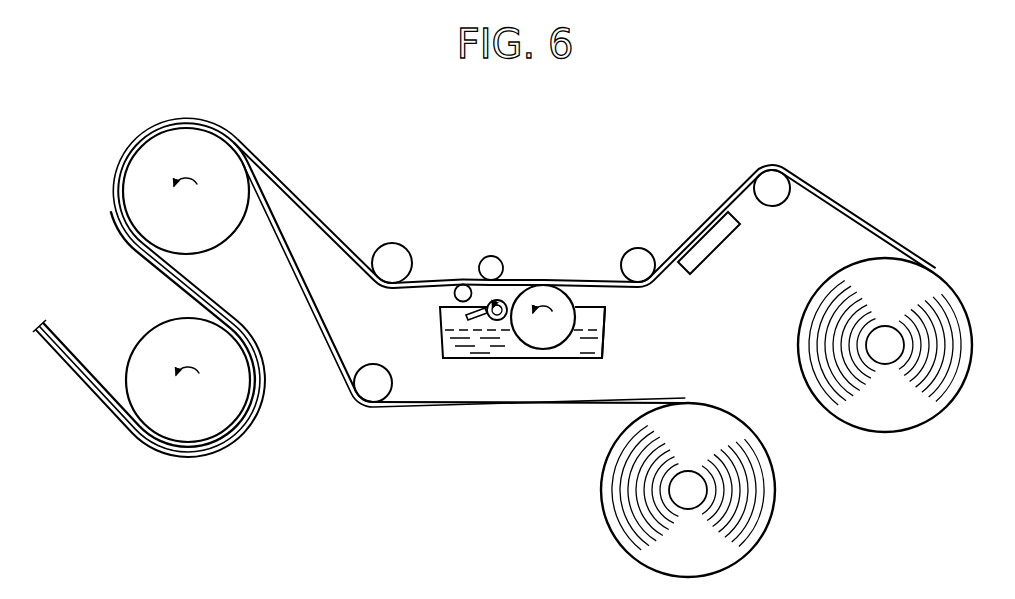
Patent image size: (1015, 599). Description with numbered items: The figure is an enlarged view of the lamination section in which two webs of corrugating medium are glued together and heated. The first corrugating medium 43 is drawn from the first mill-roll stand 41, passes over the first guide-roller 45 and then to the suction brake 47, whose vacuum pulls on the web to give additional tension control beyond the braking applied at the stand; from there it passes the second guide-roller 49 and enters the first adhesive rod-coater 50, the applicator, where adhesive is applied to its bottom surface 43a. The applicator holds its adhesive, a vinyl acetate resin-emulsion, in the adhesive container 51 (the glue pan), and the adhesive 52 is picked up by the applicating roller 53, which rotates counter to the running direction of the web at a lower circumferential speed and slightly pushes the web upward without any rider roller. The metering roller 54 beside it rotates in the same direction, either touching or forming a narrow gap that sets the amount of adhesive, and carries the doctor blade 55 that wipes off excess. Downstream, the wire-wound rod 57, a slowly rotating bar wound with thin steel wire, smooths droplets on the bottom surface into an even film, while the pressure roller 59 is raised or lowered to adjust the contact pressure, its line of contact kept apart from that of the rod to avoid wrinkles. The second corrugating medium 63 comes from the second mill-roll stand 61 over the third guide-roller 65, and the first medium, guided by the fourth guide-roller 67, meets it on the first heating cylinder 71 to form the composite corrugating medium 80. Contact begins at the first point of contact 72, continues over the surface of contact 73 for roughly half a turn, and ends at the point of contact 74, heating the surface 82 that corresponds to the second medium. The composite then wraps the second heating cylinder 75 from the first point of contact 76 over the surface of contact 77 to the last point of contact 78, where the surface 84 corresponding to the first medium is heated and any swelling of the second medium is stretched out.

The first mill-roll stand 41 is at (888, 352).
The first corrugating medium 43 is at (855, 216).
The bottom surface 43a is at (630, 300).
The first guide-roller 45 is at (781, 197).
The suction brake 47 is at (712, 246).
The second guide-roller 49 is at (637, 262).
The first adhesive rod-coater 50 is at (500, 359).
The adhesive container 51 is at (604, 348).
The coating liquid 52 is at (578, 342).
The applicating roller 53 is at (548, 300).
The metering roller 54 is at (499, 302).
The doctor blade 55 is at (466, 317).
The wire-wound rod 57 is at (462, 290).
The pressure roller 59 is at (490, 262).
The second mill-roll stand 61 is at (700, 489).
The second corrugating medium 63 is at (527, 412).
The third guide-roller 65 is at (371, 388).
The fourth guide-roller 67 is at (390, 256).
The first heating cylinder 71 is at (133, 170).
The first point of contact 72 is at (222, 147).
The surface of contact 73 is at (144, 150).
The point of contact 74 is at (141, 226).
The second heating cylinder 75 is at (211, 439).
The first point of contact 76 is at (223, 335).
The surface of contact 77 is at (241, 398).
The last point of contact 78 is at (155, 426).
The composite corrugating medium 80 is at (187, 116).
The surface 82 is at (201, 276).
The surface 84 is at (130, 253).